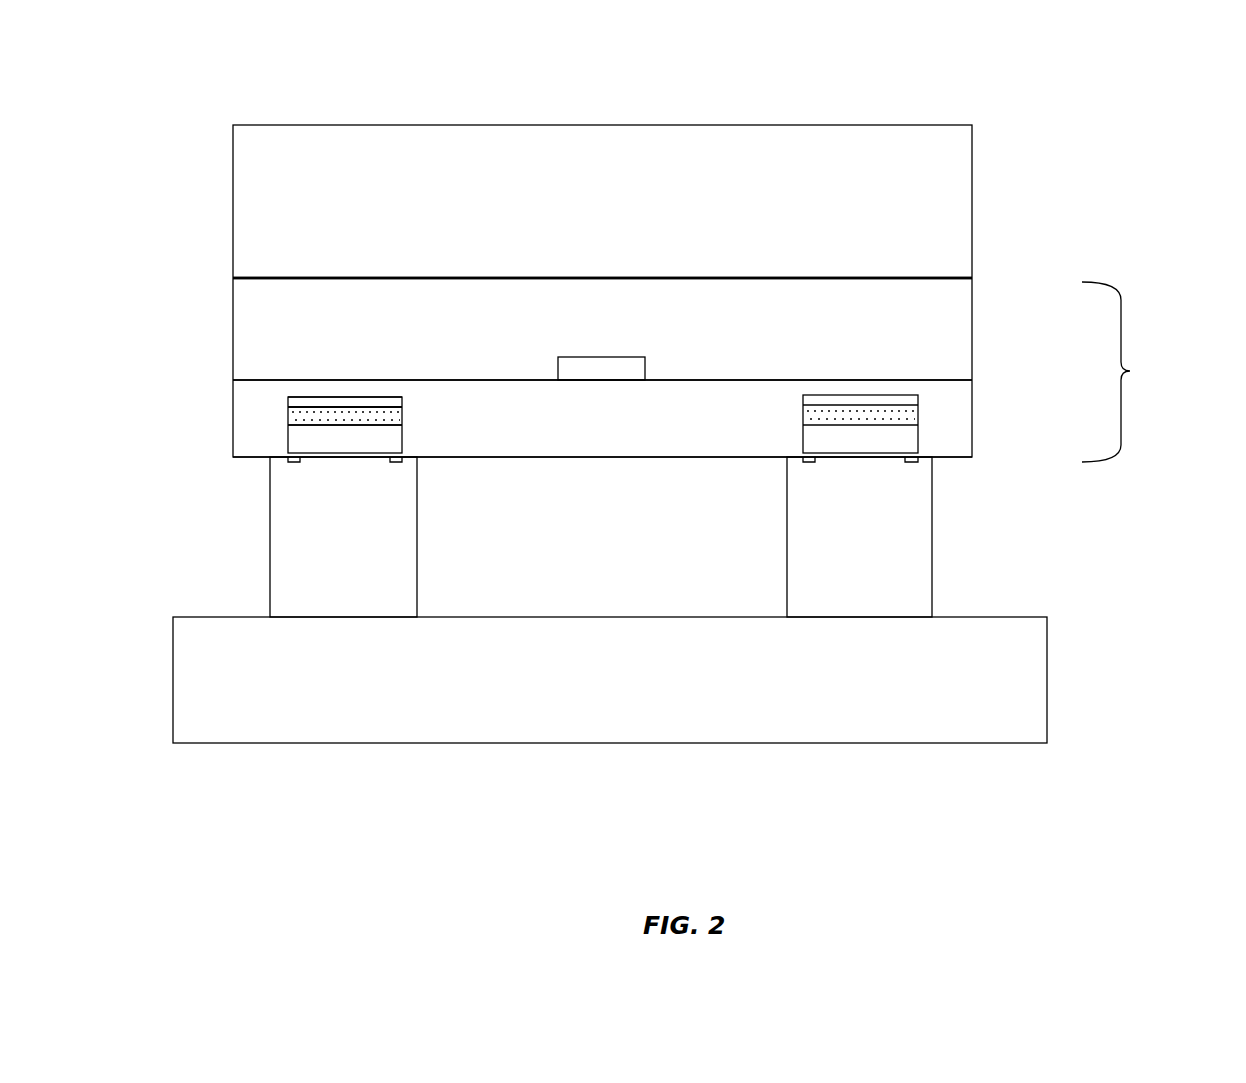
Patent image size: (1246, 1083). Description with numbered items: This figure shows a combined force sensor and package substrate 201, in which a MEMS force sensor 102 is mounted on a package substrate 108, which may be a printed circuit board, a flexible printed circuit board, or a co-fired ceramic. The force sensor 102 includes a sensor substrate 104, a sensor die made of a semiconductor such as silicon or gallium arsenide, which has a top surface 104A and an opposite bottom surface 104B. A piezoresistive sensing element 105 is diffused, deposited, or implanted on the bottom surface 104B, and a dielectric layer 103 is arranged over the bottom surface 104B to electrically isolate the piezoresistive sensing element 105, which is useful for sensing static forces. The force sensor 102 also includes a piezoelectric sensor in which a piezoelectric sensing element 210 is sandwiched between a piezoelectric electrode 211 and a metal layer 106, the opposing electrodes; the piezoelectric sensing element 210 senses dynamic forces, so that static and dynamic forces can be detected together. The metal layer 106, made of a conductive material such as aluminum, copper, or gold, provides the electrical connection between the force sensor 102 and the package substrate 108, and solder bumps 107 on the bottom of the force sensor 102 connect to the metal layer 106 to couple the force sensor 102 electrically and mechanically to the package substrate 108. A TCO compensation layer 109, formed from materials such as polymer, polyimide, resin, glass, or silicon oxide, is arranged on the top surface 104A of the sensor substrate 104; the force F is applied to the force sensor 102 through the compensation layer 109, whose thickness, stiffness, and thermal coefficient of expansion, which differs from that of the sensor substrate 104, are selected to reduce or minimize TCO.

The combined force sensor and package substrate 201 is at (947, 92).
The compensation layer 109 is at (592, 195).
The force F is at (638, 125).
The top surface 104A is at (890, 277).
The sensor substrate 104 is at (935, 298).
The bottom surface 104B is at (917, 385).
The force sensor 102 is at (1130, 371).
The piezoresistive sensing element 105 is at (600, 357).
The dielectric layer 103 is at (600, 432).
The metal layer 106 is at (347, 457).
The piezoelectric electrode 211 is at (288, 398).
The piezoelectric sensing element 210 is at (288, 415).
The solder bump 107 is at (935, 540).
The package substrate 108 is at (202, 673).